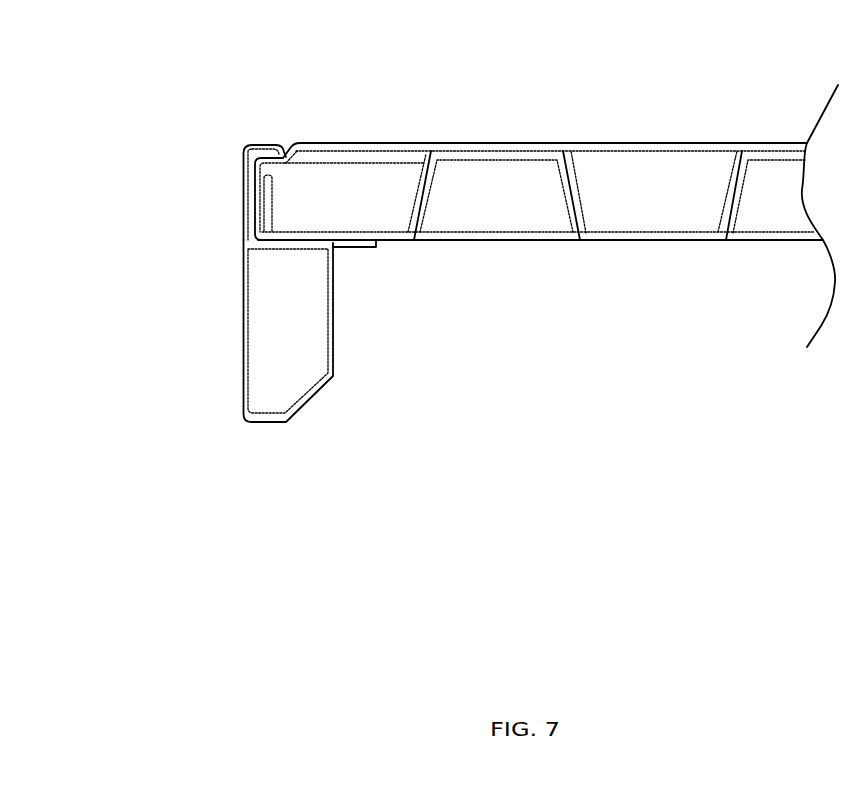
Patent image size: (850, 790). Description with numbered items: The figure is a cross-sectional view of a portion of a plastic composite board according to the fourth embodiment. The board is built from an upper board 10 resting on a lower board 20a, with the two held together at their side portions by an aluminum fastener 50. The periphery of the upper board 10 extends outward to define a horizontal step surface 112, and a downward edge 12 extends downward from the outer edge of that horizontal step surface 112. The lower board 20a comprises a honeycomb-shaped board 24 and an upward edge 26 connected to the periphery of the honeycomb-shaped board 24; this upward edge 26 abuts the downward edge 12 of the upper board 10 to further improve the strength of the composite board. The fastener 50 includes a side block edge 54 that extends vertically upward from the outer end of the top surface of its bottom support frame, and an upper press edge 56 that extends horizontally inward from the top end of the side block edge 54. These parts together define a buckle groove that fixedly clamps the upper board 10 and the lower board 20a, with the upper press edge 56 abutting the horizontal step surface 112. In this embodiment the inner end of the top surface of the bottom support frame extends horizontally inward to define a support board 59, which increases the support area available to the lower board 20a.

The upper board 10 is at (685, 136).
The downward edge 12 is at (253, 182).
The lower board 20a is at (670, 250).
The honeycomb-shaped board 24 is at (475, 203).
The upward edge 26 is at (268, 202).
The fastener 50 is at (241, 321).
The side block edge 54 is at (245, 219).
The upper press edge 56 is at (272, 151).
The support board 59 is at (348, 245).
The horizontal step surface 112 is at (279, 155).